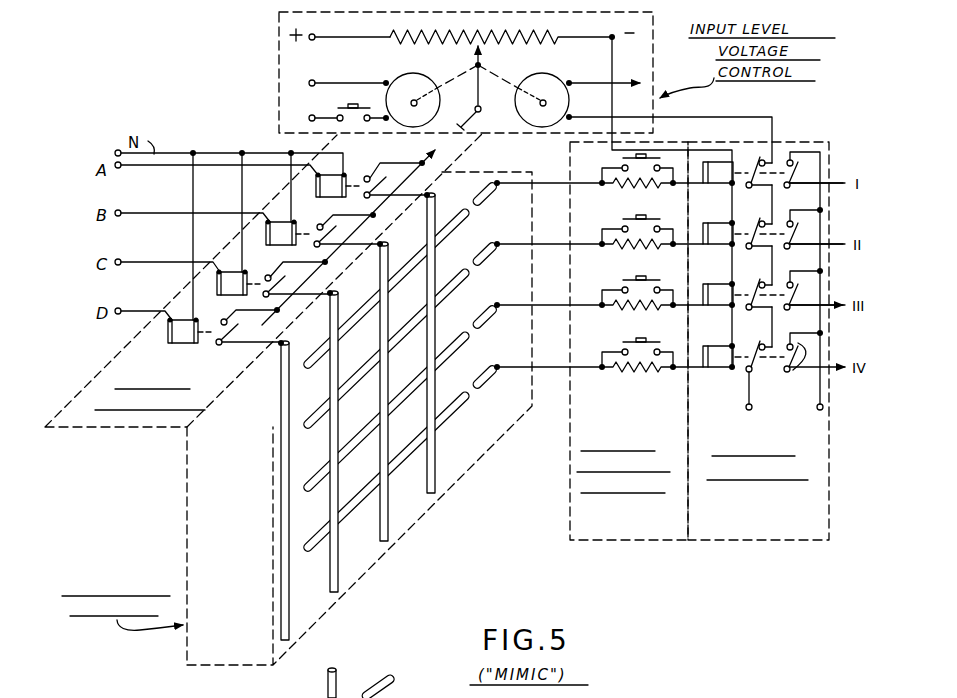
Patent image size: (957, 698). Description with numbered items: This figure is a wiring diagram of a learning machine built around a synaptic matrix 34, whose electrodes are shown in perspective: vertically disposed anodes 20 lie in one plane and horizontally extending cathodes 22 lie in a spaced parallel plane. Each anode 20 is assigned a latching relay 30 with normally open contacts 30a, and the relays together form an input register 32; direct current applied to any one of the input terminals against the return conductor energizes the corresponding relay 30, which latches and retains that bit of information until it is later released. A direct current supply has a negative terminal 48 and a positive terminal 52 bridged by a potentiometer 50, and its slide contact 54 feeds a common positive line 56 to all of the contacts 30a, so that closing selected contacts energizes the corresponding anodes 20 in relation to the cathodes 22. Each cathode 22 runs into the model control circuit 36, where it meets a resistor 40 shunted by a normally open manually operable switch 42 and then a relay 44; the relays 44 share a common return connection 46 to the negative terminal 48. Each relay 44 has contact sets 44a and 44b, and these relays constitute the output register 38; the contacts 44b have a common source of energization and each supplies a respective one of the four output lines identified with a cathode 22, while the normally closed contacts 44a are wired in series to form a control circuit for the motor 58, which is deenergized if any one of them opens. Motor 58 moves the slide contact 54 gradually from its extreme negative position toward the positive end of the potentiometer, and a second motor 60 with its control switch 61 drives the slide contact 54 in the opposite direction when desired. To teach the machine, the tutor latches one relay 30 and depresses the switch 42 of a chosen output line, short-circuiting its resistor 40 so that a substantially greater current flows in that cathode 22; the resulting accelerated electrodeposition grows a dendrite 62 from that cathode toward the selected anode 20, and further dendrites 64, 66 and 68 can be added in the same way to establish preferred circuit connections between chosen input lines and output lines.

The anode 20 is at (280, 459).
The cathode 22 is at (395, 437).
The latching relay 30 is at (174, 318).
The normally open contacts 30a is at (233, 326).
The input register 32 is at (104, 428).
The synaptic matrix 34 is at (186, 659).
The model control circuit 36 is at (604, 542).
The output register 38 is at (747, 542).
The resistor 40 is at (639, 371).
The manually operable switch 42 is at (622, 342).
The relay 44 is at (720, 369).
The contacts 44a is at (768, 348).
The contacts 44b is at (801, 370).
The common return connection 46 is at (735, 140).
The negative terminal 48 is at (615, 29).
The potentiometer 50 is at (497, 43).
The positive terminal 52 is at (315, 40).
The slide contact 54 is at (474, 58).
The common positive line 56 is at (425, 170).
The motor 58 is at (562, 69).
The motor 60 is at (400, 76).
The control switch 61 is at (337, 109).
The dendrite 62 is at (325, 467).
The dendrite 64 is at (412, 444).
The dendrite 66 is at (462, 207).
The dendrite 68 is at (362, 365).